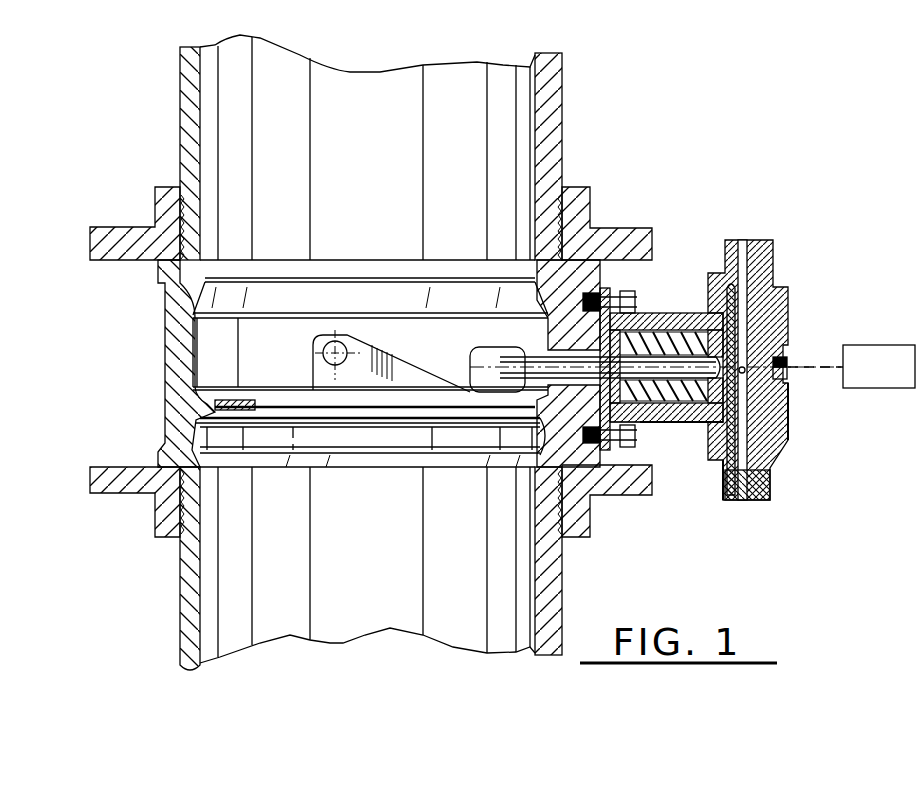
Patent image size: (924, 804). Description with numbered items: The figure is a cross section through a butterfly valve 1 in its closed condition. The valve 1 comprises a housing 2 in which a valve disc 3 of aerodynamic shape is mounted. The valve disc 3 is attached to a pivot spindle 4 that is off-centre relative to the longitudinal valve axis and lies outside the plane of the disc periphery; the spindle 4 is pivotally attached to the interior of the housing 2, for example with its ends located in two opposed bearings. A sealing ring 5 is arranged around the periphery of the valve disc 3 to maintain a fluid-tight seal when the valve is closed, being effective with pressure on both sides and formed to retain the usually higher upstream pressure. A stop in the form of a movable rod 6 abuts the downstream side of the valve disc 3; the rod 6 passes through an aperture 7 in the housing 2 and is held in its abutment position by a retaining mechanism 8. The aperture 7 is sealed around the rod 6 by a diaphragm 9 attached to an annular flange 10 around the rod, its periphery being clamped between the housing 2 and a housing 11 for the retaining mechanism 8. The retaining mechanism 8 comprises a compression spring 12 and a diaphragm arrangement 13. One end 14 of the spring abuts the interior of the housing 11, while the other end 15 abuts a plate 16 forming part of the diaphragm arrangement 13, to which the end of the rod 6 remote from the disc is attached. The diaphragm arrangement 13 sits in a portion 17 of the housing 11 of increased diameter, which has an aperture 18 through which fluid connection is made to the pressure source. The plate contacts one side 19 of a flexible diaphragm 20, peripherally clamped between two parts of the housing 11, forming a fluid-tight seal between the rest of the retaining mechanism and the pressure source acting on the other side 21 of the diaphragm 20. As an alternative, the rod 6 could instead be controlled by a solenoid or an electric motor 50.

The valve 1 is at (162, 371).
The housing 2 is at (168, 452).
The valve disc 3 is at (317, 398).
The pivot spindle 4 is at (338, 350).
The sealing ring 5 is at (251, 402).
The movable rod 6 is at (520, 368).
The aperture 7 is at (560, 345).
The retaining mechanism 8 is at (678, 440).
The diaphragm 9 is at (603, 290).
The annular flange 10 is at (543, 367).
The housing for the retaining mechanism 11 is at (686, 313).
The compression spring 12 is at (667, 347).
The diaphragm arrangement 13 is at (780, 463).
The end of the spring 14 is at (627, 417).
The other end of the spring 15 is at (690, 424).
The plate 16 is at (725, 480).
The portion of increased diameter 17 is at (737, 500).
The aperture 18 is at (793, 357).
The one side of the flexible diaphragm 19 is at (742, 377).
The flexible diaphragm 20 is at (788, 430).
The other side of the diaphragm 21 is at (745, 300).
The electric motor 50 is at (860, 384).